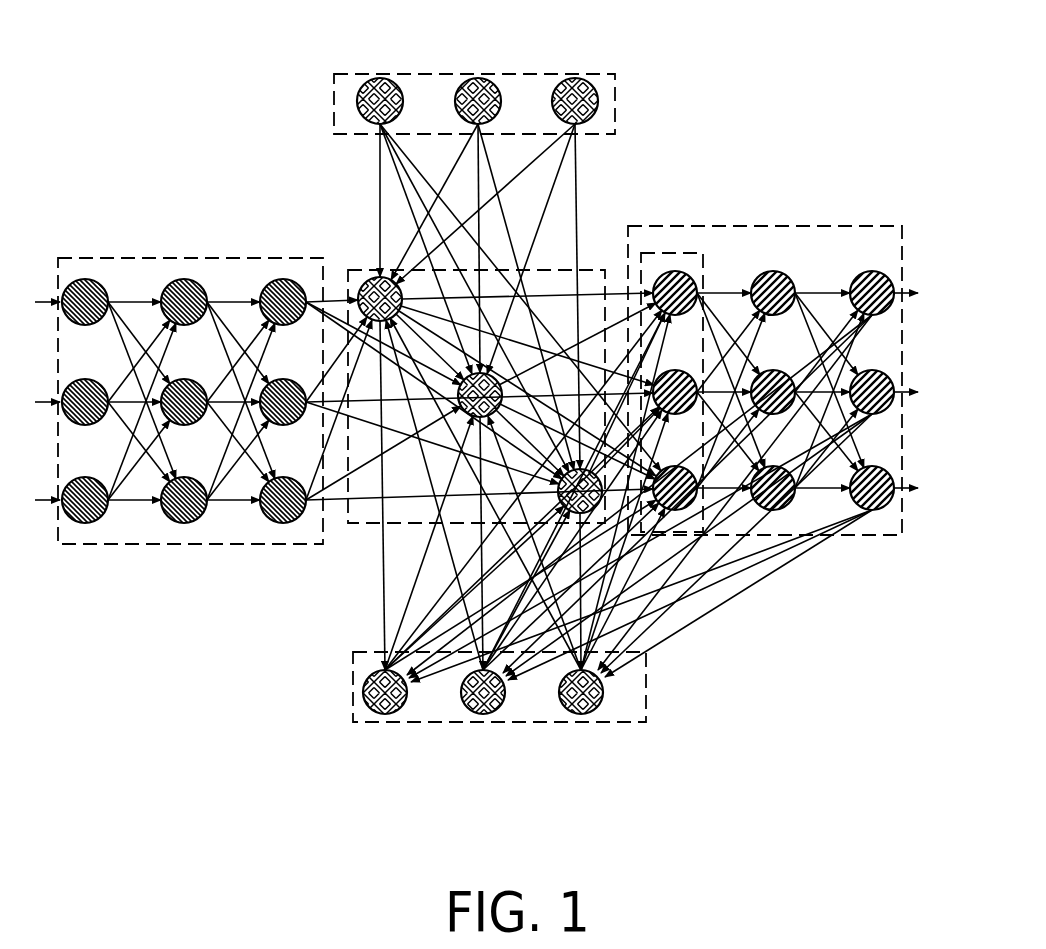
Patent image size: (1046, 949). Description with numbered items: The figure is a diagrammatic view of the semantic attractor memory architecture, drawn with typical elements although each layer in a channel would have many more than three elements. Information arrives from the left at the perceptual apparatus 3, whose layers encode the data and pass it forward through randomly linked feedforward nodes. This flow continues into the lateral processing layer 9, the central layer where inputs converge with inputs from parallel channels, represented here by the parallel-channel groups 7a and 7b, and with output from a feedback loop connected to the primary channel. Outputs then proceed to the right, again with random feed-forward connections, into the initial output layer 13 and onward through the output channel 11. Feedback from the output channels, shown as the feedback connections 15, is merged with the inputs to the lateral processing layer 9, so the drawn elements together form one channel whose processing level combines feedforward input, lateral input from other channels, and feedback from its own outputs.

The first neural network / input network module 3 is at (179, 340).
The first context layer 7a is at (474, 79).
The second context layer 7b is at (519, 717).
The hidden layer network module 9 is at (514, 332).
The output neural network module 11 is at (773, 439).
The input layer of output network module 13 is at (705, 351).
The feedback connections 15 is at (639, 514).